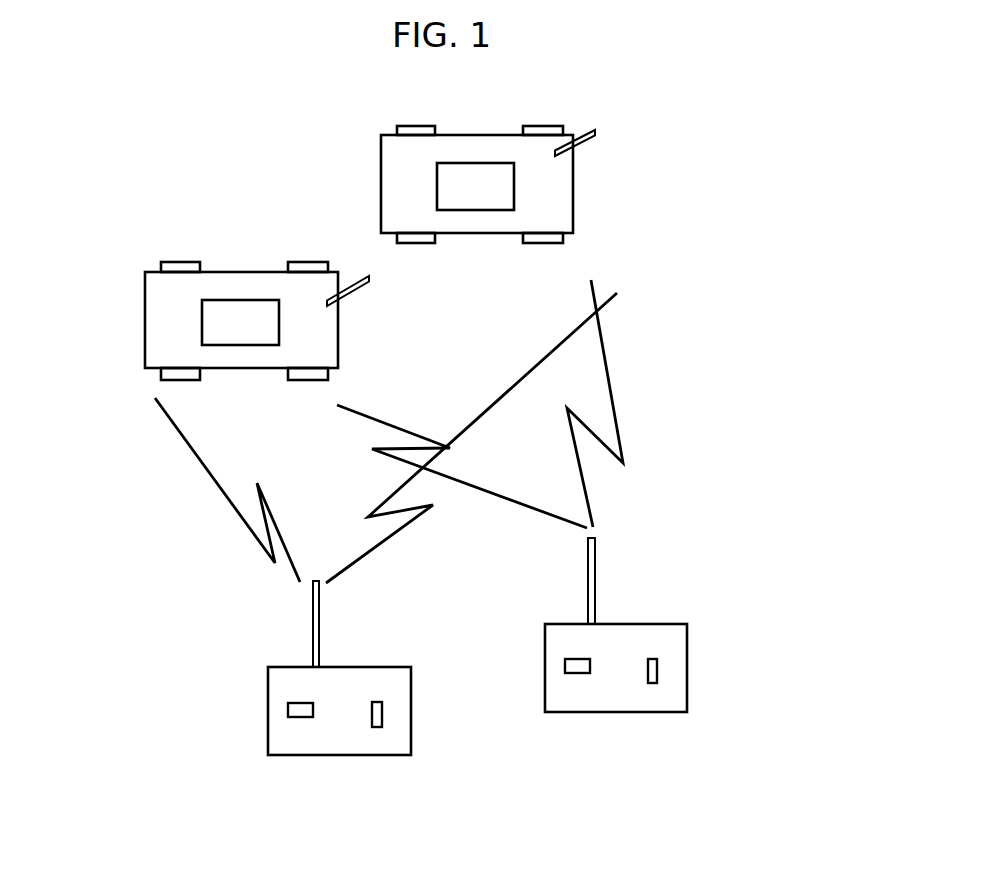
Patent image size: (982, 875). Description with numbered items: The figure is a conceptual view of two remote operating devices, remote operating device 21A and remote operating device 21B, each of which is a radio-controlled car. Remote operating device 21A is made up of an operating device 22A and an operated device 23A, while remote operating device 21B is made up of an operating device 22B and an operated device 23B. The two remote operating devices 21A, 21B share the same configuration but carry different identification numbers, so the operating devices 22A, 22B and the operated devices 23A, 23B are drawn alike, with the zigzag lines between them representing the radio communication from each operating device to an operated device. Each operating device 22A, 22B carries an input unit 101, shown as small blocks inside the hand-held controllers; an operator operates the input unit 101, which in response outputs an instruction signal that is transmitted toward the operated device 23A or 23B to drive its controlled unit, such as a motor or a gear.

The remote operating device 21A is at (110, 582).
The remote operating device 21B is at (770, 523).
The operated device 23A is at (232, 345).
The operated device 23B is at (490, 192).
The operating device 22A is at (293, 738).
The operating device 22B is at (597, 658).
The input unit 101 is at (372, 727).